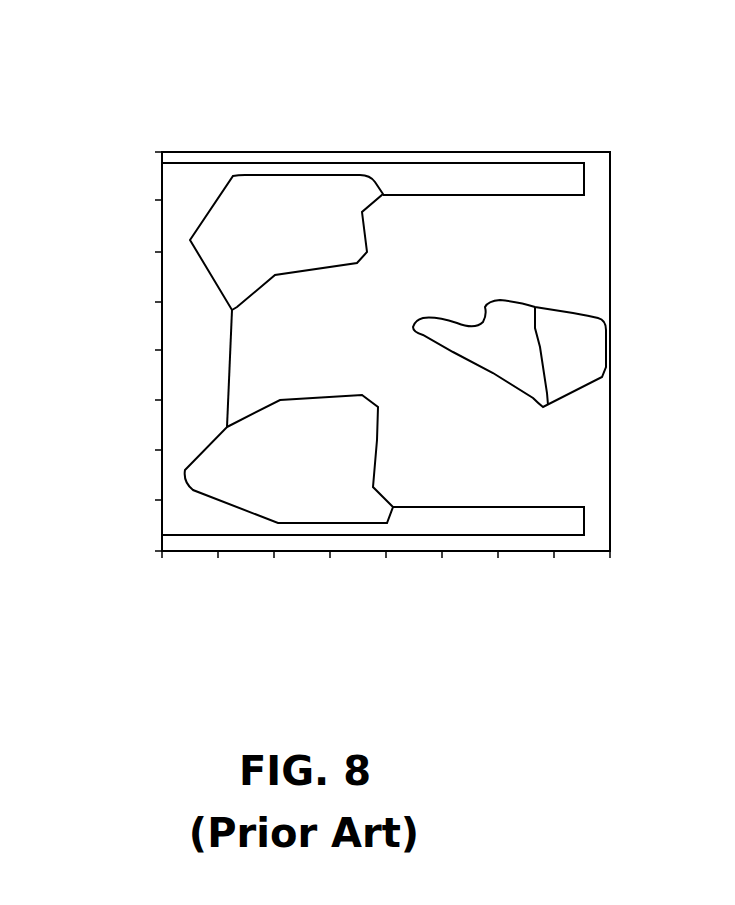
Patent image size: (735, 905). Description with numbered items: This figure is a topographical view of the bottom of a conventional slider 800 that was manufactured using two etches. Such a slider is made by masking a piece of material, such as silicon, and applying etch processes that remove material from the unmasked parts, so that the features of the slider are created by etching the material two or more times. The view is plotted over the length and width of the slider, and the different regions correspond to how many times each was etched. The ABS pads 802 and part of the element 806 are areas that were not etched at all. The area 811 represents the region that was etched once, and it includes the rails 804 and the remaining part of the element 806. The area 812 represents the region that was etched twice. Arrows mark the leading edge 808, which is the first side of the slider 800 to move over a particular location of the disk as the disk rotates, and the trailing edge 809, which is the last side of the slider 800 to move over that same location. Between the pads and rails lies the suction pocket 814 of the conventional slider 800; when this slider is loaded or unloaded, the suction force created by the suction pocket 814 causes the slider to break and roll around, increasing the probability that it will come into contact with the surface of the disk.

The conventional slider 800 is at (649, 114).
The ABS pads 802 is at (289, 349).
The rails 804 is at (422, 177).
The element 806 is at (575, 353).
The leading edge 808 is at (178, 104).
The trailing edge 809 is at (592, 104).
The area etched once 811 is at (204, 368).
The area etched twice 812 is at (509, 353).
The suction pocket 814 is at (428, 417).